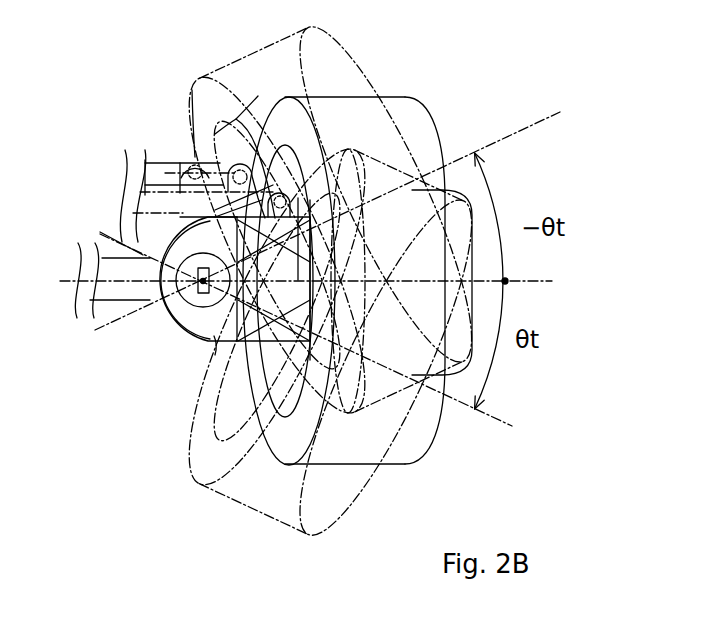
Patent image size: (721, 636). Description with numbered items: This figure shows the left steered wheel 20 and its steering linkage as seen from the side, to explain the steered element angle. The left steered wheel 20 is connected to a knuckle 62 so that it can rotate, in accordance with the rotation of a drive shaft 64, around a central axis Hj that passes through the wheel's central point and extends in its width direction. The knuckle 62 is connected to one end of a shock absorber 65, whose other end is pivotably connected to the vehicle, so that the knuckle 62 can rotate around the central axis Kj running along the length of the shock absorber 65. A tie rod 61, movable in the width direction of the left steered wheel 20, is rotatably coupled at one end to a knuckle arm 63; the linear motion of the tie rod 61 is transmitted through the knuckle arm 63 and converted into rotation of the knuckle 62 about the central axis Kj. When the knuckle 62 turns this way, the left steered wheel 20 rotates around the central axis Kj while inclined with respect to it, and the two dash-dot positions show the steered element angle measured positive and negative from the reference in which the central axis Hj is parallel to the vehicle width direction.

The left steered wheel 20 is at (412, 106).
The tie rod 61 is at (180, 172).
The knuckle 62 is at (215, 355).
The knuckle arm 63 is at (227, 135).
The drive shaft 64 is at (138, 258).
The shock absorber 65 is at (195, 340).
The central axis of the shock absorber Kj is at (205, 305).
The central axis of the left steered wheel Hj is at (546, 282).